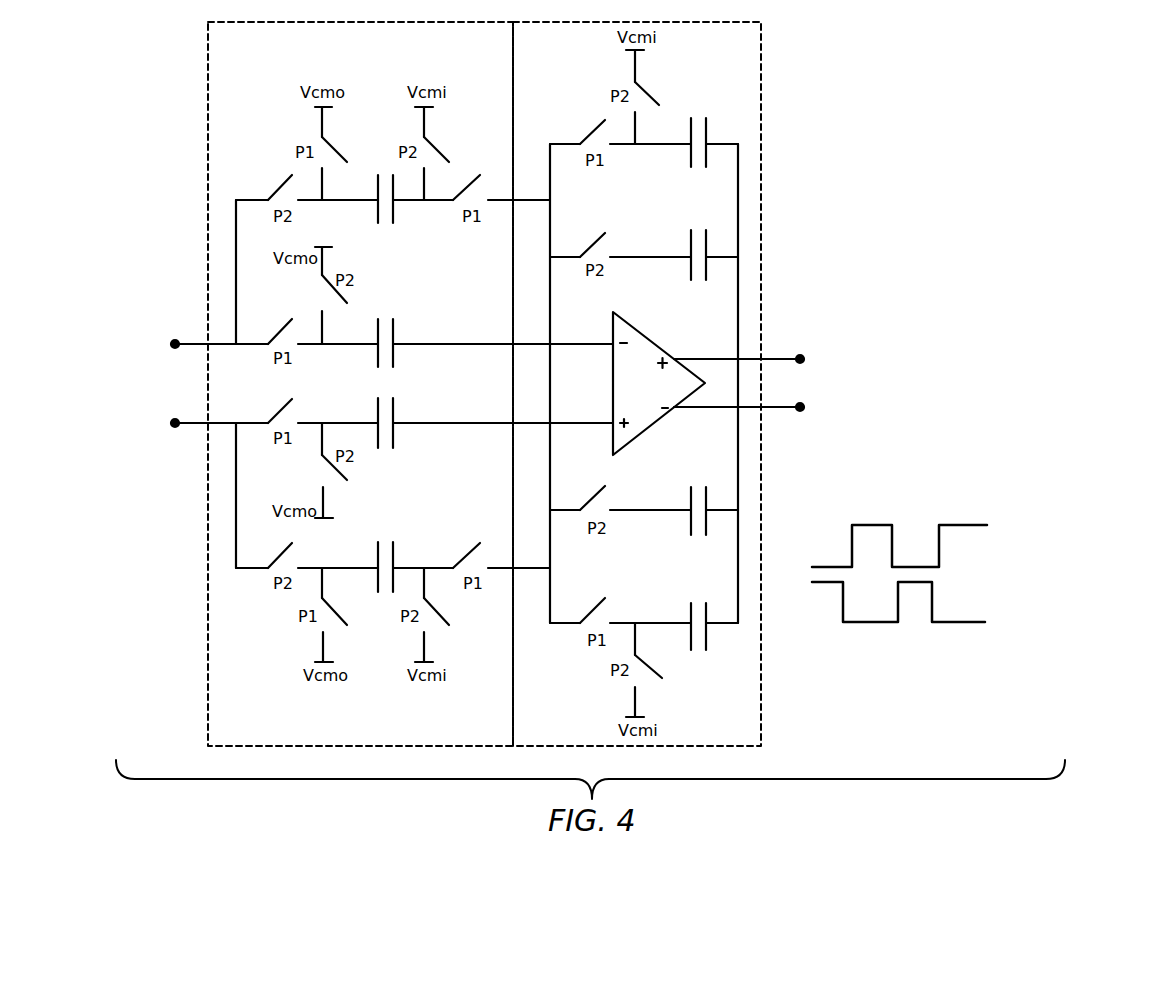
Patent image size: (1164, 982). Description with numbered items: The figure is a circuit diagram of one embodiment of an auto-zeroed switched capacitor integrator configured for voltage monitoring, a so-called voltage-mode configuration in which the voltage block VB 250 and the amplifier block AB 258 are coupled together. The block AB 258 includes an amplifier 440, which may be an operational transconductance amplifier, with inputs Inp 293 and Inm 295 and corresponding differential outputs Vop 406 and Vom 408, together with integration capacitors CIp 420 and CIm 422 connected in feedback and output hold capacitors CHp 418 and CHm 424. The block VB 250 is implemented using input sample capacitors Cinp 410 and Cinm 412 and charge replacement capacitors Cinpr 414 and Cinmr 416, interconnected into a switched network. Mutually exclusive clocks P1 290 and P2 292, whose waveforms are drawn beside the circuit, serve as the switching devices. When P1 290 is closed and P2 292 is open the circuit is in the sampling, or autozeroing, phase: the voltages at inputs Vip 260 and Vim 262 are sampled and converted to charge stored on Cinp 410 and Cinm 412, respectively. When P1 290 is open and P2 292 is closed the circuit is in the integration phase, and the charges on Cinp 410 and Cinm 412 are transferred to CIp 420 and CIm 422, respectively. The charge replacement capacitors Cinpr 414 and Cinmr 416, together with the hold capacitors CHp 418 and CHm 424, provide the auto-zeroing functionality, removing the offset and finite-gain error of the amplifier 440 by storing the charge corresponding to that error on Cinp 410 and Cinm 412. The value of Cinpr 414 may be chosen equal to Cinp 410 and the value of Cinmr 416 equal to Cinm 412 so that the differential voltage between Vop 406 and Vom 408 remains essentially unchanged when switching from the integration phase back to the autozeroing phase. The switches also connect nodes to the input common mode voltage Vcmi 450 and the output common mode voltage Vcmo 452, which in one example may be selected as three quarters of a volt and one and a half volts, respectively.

The VB 250 is at (258, 739).
The AB 258 is at (563, 739).
The Vip 260 is at (198, 346).
The Vim 262 is at (198, 424).
The P1 290 is at (918, 547).
The P2 292 is at (918, 603).
The Inp 293 is at (592, 346).
The Inm 295 is at (592, 421).
The positive output Vop 406 is at (760, 358).
The negative output Vom 408 is at (762, 406).
The Cinp 410 is at (393, 362).
The Cinm 412 is at (393, 443).
The Cinpr 414 is at (377, 212).
The Cinmr 416 is at (378, 552).
The CHp 418 is at (691, 157).
The CIp 420 is at (691, 270).
The CIm 422 is at (691, 525).
The CHm 424 is at (691, 608).
The amplifier 440 is at (645, 333).
The Vcmi 450 is at (961, 653).
The Vcmo 452 is at (968, 675).